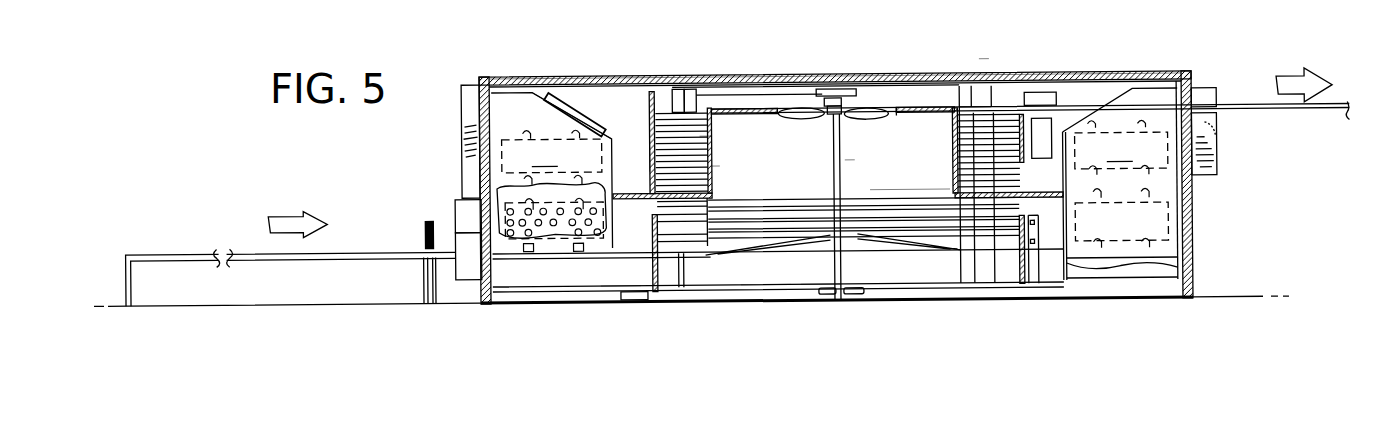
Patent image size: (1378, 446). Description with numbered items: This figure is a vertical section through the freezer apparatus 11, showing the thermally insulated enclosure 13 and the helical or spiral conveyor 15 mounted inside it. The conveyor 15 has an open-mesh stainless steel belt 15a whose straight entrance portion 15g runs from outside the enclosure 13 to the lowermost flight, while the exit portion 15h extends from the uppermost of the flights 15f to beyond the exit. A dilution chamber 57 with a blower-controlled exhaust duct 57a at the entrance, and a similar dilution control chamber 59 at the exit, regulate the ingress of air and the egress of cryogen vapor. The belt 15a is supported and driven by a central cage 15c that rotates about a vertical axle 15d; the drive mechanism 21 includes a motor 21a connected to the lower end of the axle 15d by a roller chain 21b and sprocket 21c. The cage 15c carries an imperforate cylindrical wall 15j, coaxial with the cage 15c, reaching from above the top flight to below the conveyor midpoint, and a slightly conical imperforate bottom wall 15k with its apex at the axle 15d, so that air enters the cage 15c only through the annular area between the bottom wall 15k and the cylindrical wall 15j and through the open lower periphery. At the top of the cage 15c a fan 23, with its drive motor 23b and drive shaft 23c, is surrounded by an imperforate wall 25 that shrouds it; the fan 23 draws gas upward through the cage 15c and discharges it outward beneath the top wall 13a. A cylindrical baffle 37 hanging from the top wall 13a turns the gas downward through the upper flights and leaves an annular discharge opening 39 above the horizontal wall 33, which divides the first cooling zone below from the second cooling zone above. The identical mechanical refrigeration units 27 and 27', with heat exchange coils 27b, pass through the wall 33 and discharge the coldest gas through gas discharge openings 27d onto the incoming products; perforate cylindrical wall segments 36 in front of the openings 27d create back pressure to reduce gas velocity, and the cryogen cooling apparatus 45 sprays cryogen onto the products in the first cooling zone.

The freezer apparatus 11 is at (987, 57).
The thermally insulated enclosure 13 is at (1100, 45).
The top wall 13a is at (830, 73).
The helical or spiral conveyor 15 is at (788, 95).
The conveyor belt 15a is at (360, 246).
The central core or cage 15c is at (915, 184).
The vertical axle 15d is at (850, 162).
The loops or flights 15f is at (700, 142).
The straight entrance portion 15g is at (303, 256).
The exit portion 15h is at (1240, 105).
The imperforate cylindrical wall 15j is at (717, 168).
The bottom wall 15k is at (867, 240).
The drive mechanism 21 is at (636, 306).
The motor 21a is at (617, 290).
The roller chain 21b is at (773, 268).
The sprocket 21c is at (830, 283).
The fan 23 is at (826, 125).
The drive motor 23b is at (1057, 101).
The drive shaft 23c is at (922, 95).
The imperforate wall 25 is at (718, 73).
The mechanical refrigeration unit 27 is at (575, 87).
The mechanical refrigeration unit 27' is at (1122, 150).
The heat exchange coils 27b is at (500, 192).
The gas discharge openings 27d is at (613, 262).
The horizontal wall 33 is at (648, 190).
The perforate cylindrical wall segments 36 is at (663, 271).
The cylindrical baffle 37 is at (650, 92).
The annular discharge opening 39 is at (651, 170).
The cryogen cooling apparatus 45 is at (1080, 225).
The dilution chamber 57 is at (456, 233).
The blower-controlled exhaust duct 57a is at (467, 105).
The dilution control chamber 59 is at (1218, 153).